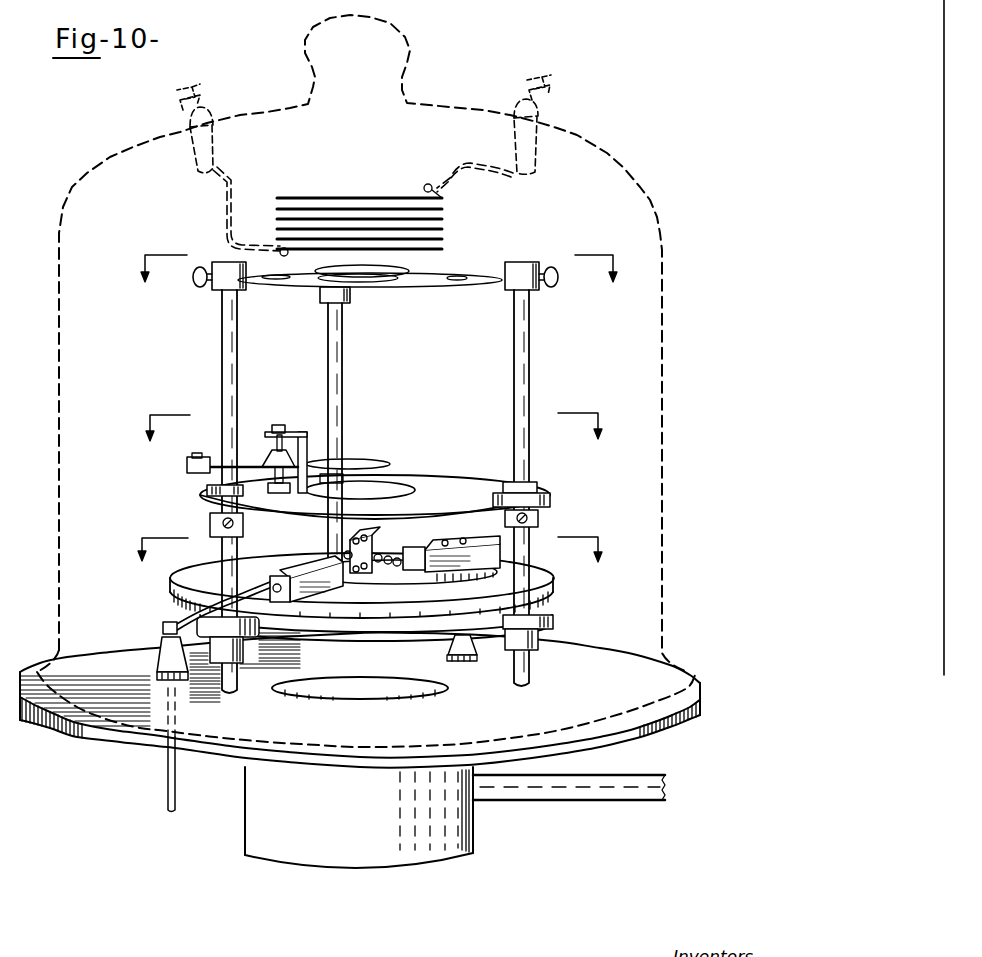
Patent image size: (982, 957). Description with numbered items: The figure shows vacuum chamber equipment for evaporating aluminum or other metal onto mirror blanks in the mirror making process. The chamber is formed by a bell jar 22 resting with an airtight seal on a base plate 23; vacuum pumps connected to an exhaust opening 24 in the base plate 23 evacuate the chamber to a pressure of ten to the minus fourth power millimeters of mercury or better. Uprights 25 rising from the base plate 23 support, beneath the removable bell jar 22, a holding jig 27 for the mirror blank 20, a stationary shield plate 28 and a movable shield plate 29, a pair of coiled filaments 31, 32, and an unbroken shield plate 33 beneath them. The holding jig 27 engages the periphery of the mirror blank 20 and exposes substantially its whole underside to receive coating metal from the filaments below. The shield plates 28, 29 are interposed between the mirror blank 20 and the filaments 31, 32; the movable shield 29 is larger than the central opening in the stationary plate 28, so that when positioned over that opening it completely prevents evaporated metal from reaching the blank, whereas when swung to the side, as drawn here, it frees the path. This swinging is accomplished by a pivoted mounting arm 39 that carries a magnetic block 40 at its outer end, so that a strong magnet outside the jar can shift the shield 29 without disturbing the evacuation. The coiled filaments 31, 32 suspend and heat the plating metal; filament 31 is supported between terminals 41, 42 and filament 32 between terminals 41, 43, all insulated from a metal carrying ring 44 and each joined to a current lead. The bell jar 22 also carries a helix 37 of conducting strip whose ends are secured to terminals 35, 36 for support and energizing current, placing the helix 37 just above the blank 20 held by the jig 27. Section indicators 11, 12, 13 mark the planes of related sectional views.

The section line 11- 11 is at (383, 263).
The section line 12- 12 is at (376, 422).
The section line 13- 13 is at (371, 544).
The mirror blank 20 is at (392, 270).
The bell jar 22 is at (665, 333).
The base plate 23 is at (360, 750).
The exhaust opening 24 is at (335, 698).
The uprights 25 is at (228, 355).
The holding jig 27 is at (303, 285).
The stationary shield plate 28 is at (450, 488).
The movable shield plate 29 is at (373, 460).
The coiled filament 31 is at (345, 553).
The coiled filament 32 is at (385, 556).
The unbroken shield plate 33 is at (408, 627).
The terminal 35 is at (200, 150).
The terminal 36 is at (524, 158).
The helix 37 is at (340, 194).
The mounting arm 39 is at (248, 460).
The magnetic block 40 is at (200, 472).
The terminal 41 is at (313, 584).
The terminal 42 is at (349, 540).
The terminal 43 is at (485, 548).
The metal carrying ring 44 is at (553, 581).